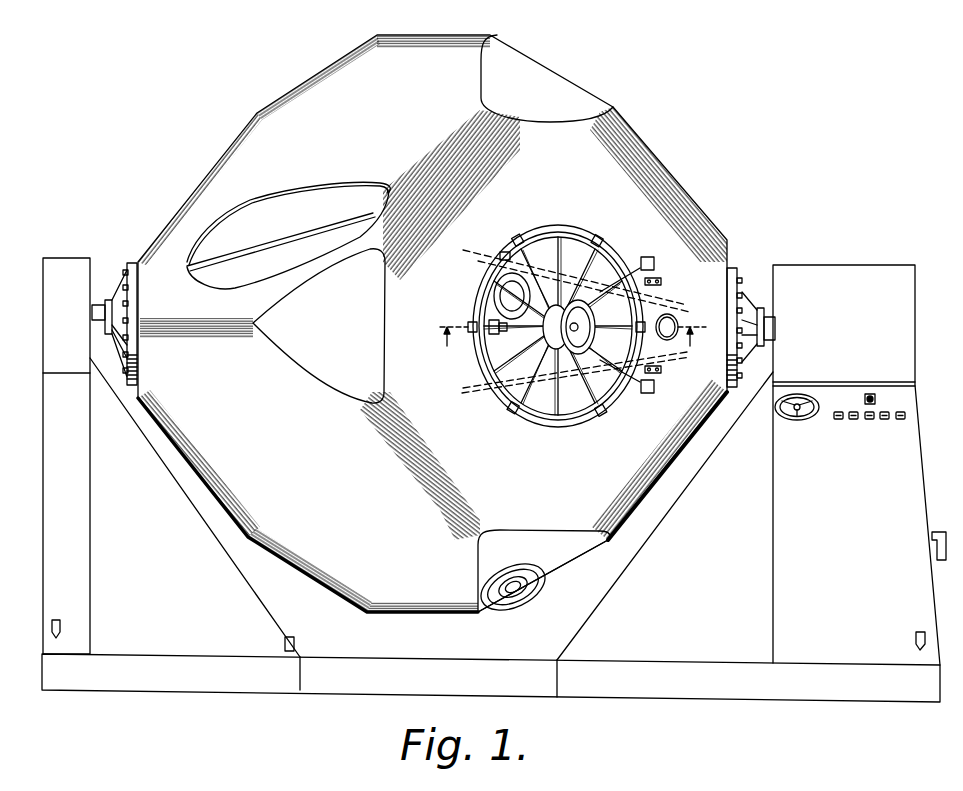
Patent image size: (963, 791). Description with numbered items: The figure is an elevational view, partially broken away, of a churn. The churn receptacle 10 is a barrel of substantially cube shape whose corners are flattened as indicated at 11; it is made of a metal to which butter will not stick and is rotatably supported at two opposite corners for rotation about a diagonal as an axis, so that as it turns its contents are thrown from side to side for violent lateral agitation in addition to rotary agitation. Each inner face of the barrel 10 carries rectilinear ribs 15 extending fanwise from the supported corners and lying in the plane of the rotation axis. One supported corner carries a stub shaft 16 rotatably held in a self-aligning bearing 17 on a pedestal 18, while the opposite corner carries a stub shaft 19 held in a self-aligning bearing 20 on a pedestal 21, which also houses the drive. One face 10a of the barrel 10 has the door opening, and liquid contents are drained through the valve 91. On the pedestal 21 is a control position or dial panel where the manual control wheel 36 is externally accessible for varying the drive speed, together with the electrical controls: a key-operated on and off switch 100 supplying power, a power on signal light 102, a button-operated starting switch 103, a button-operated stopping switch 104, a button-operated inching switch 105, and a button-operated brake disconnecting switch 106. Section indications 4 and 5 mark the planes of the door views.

The section line arrows 4 is at (571, 346).
The clamps 5 is at (500, 258).
The churn receptacle 10 is at (620, 181).
The face of the barrel 10a is at (662, 220).
The flattened corners 11 is at (560, 78).
The rectilinear ribs 15 is at (228, 263).
The stub shaft 16 is at (100, 313).
The self-aligning bearing 17 is at (62, 268).
The pedestal 18 is at (52, 460).
The stub shaft 19 is at (768, 310).
The self-aligning bearing 20 is at (816, 270).
The pedestal 21 is at (746, 504).
The manual control wheel 36 is at (795, 420).
The valve 91 is at (523, 572).
The key-operated on and off switch 100 is at (870, 393).
The power on signal light 102 is at (837, 421).
The starting switch 103 is at (853, 421).
The stopping switch 104 is at (869, 421).
The inching switch 105 is at (884, 421).
The brake disconnecting switch 106 is at (901, 421).